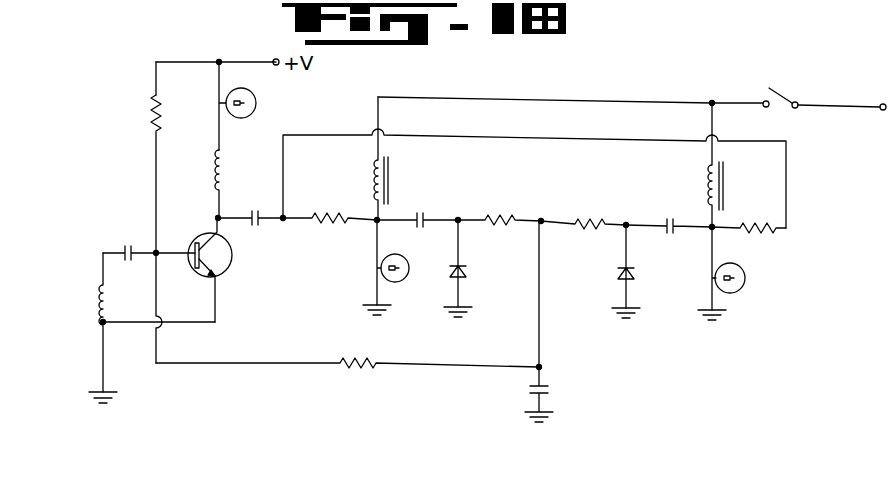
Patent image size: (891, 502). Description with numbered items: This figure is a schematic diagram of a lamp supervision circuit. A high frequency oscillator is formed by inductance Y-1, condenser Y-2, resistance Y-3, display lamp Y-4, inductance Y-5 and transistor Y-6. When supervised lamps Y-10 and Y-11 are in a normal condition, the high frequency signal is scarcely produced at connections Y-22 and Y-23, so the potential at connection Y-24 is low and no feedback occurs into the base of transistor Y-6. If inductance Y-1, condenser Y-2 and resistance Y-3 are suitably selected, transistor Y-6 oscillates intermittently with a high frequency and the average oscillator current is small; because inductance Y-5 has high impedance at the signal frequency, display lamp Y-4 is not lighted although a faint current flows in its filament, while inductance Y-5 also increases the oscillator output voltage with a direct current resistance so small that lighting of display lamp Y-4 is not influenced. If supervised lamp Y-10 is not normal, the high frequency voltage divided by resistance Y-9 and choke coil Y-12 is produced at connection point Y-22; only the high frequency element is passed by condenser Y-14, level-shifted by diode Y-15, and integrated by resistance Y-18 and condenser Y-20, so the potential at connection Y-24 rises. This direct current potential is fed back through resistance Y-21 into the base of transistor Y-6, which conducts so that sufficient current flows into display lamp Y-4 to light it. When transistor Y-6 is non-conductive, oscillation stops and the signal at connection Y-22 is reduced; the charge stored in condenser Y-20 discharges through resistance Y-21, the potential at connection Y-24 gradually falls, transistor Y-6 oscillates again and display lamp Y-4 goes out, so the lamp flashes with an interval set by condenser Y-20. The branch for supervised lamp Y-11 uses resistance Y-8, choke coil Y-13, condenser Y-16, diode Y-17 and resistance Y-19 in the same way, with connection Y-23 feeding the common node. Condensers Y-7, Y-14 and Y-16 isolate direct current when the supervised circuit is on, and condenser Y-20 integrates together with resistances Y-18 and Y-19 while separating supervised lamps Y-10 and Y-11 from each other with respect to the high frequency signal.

The inductance 1 is at (94, 308).
The condenser 2 is at (128, 245).
The resistance 3 is at (152, 106).
The display lamp 4 is at (257, 103).
The inductance 5 is at (224, 176).
The transistor 6 is at (232, 260).
The condenser 7 is at (255, 226).
The resistance 8 is at (754, 220).
The resistance 9 is at (326, 212).
The supervised lamp 10 is at (401, 283).
The supervised lamp 11 is at (745, 278).
The choke coil 12 is at (392, 180).
The choke coil 13 is at (704, 182).
The condenser 14 is at (420, 228).
The diode 15 is at (466, 271).
The condenser 16 is at (670, 234).
The diode 17 is at (618, 272).
The resistance 18 is at (493, 214).
The resistance 19 is at (588, 220).
The condenser 20 is at (553, 391).
The resistance 21 is at (350, 372).
The connection point 22 is at (374, 222).
The connection 23 is at (714, 228).
The connection 24 is at (493, 251).